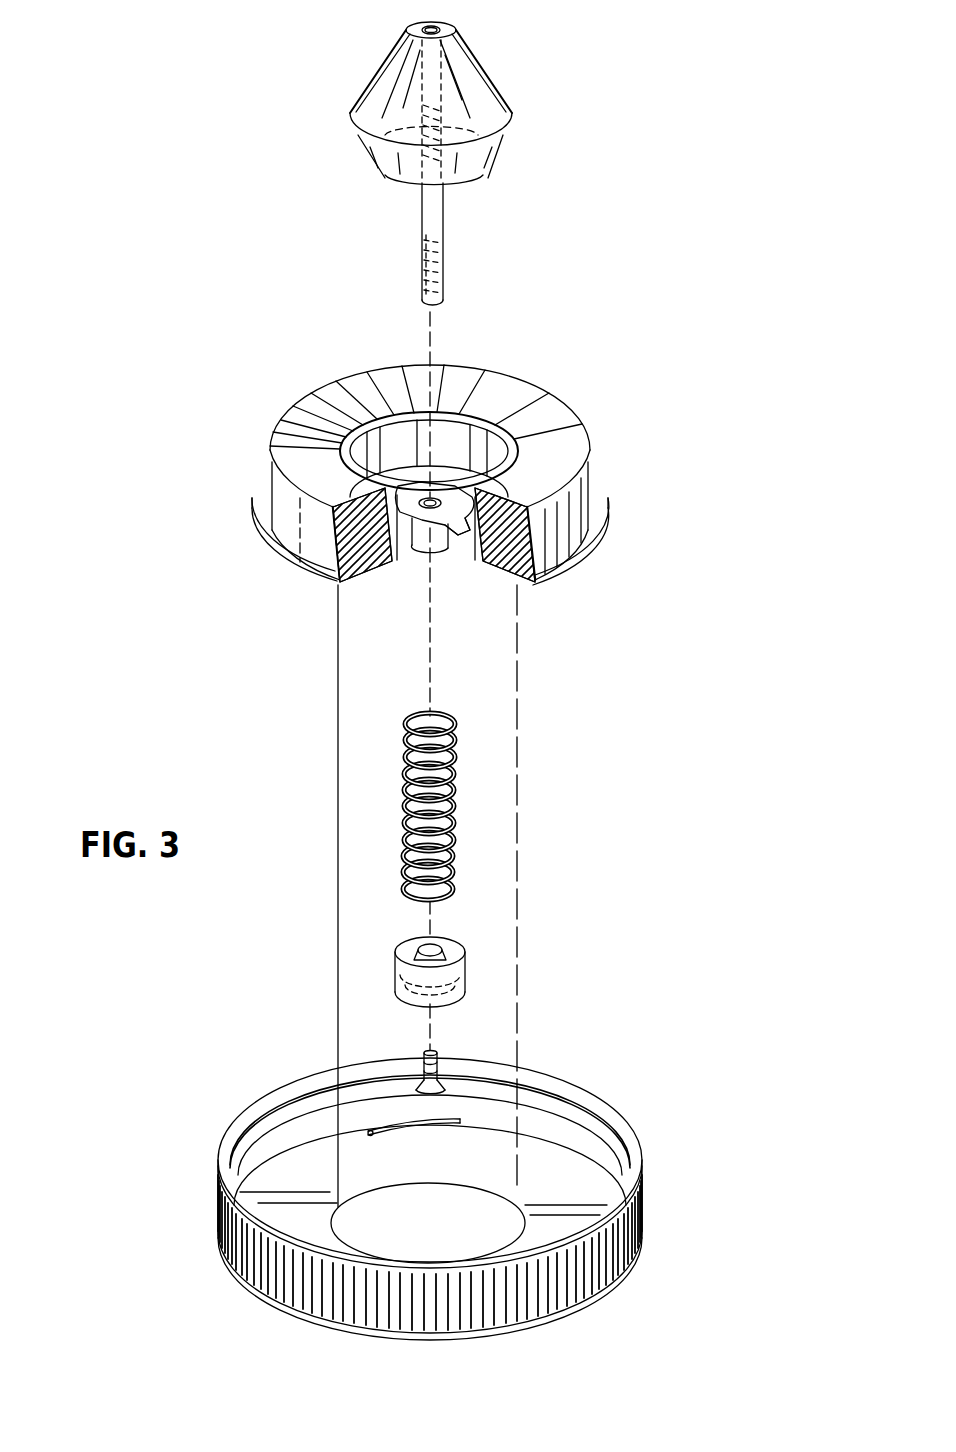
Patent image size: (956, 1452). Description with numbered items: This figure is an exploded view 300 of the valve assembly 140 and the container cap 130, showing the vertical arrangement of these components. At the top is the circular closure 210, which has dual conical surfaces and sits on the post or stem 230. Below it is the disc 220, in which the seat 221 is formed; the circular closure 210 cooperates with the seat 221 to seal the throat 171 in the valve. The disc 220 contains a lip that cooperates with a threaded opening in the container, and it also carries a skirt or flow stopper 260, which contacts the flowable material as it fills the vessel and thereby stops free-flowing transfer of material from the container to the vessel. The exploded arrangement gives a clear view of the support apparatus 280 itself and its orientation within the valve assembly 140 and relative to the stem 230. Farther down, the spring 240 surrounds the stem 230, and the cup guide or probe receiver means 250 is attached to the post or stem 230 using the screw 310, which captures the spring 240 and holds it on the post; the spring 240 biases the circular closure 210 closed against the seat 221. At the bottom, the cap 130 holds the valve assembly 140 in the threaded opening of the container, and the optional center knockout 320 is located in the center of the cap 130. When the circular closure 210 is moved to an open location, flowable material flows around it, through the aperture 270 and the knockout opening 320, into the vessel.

The exploded view 300 is at (288, 88).
The circular closure 210 is at (493, 92).
The stem 230 is at (443, 238).
The valve assembly 140 is at (224, 434).
The disc 220 is at (455, 507).
The seat 221 is at (470, 422).
The aperture 270 is at (596, 540).
The support apparatus 280 is at (415, 530).
The throat 171 is at (442, 562).
The flow stopper 260 is at (486, 580).
The spring 240 is at (449, 809).
The cup guide 250 is at (451, 996).
The screw 310 is at (432, 1097).
The center knockout 320 is at (457, 1247).
The container cap 130 is at (463, 1196).